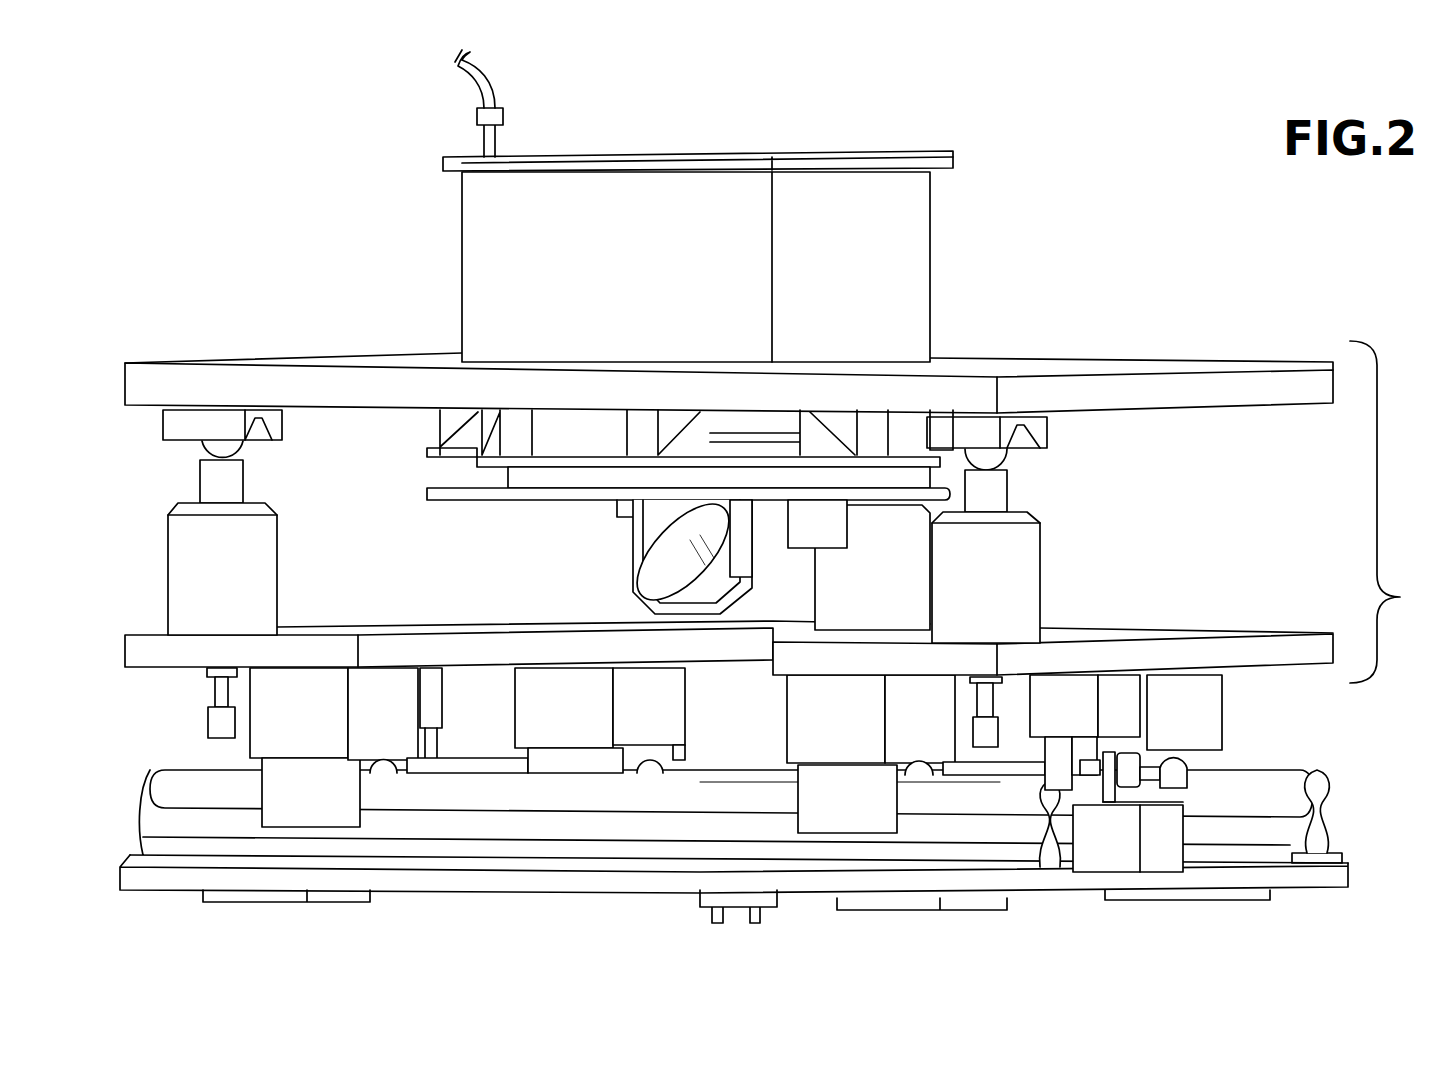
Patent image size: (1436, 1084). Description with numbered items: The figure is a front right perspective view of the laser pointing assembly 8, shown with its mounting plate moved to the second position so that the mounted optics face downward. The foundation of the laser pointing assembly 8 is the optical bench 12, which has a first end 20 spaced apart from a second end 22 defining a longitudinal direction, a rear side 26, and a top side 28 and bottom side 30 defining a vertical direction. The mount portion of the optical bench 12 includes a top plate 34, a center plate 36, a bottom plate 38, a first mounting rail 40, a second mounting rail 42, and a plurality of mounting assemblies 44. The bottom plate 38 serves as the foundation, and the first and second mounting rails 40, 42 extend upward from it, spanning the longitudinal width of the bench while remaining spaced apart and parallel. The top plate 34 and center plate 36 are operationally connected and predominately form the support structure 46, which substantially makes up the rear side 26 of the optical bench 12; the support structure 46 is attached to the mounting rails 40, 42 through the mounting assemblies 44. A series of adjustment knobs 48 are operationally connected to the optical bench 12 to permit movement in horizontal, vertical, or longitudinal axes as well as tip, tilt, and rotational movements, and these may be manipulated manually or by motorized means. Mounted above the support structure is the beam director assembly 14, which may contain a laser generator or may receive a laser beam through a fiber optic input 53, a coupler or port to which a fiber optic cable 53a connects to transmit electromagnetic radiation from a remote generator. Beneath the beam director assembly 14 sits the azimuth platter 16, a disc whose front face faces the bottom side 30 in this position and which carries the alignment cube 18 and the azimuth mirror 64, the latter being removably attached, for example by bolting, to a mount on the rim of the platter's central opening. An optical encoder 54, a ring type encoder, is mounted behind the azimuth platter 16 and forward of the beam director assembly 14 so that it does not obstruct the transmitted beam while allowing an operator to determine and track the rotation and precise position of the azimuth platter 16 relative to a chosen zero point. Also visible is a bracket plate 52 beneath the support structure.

The laser pointing assembly 8 is at (255, 185).
The optical bench 12 is at (994, 271).
The beam director assembly 14 is at (633, 228).
The azimuth platter 16 is at (515, 505).
The alignment cube 18 is at (855, 533).
The first end 20 is at (119, 522).
The second end 22 is at (1287, 533).
The rear side 26 is at (1256, 341).
The top side 28 is at (725, 136).
The bottom side 30 is at (588, 905).
The top plate 34 is at (356, 404).
The center plate 36 is at (171, 659).
The bottom plate 38 is at (1316, 885).
The first mounting rail 40 is at (150, 786).
The second mounting rail 42 is at (1290, 779).
The mounting assemblies 44 is at (393, 705).
The support structure 46 is at (1400, 597).
The adjustment knobs 48 is at (212, 718).
The bracket plate 52 is at (427, 452).
The fiber optic input 53 is at (477, 117).
The fiber optic cable 53a is at (490, 87).
The optical encoder 54 is at (862, 482).
The azimuth mirror 64 is at (668, 562).